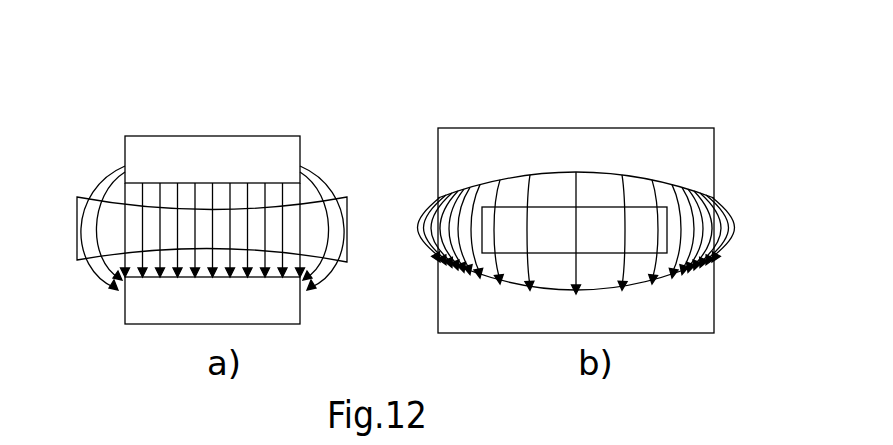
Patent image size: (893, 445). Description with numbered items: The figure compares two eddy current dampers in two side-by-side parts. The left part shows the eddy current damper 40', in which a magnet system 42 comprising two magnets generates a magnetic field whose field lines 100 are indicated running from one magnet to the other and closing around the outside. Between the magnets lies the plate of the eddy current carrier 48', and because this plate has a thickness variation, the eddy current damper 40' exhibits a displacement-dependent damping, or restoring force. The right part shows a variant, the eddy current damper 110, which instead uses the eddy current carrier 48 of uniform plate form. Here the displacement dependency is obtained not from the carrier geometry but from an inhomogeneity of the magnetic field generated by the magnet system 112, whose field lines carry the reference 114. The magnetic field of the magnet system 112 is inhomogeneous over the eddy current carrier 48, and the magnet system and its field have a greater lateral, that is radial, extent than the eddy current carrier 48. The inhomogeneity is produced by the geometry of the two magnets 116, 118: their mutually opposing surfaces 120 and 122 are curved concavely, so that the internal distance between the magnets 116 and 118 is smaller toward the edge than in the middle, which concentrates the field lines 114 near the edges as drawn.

The field lines 100 is at (107, 177).
The eddy current damper 40' is at (187, 188).
The magnet system 42 is at (301, 131).
The eddy current carrier 48' is at (187, 238).
The eddy current damper 110 is at (557, 109).
The magnet system 112 is at (718, 124).
The field lines 114 is at (468, 201).
The magnet 116 is at (700, 163).
The magnet 118 is at (698, 303).
The surface 120 is at (600, 188).
The surface 122 is at (597, 284).
The eddy current carrier 48 is at (589, 170).